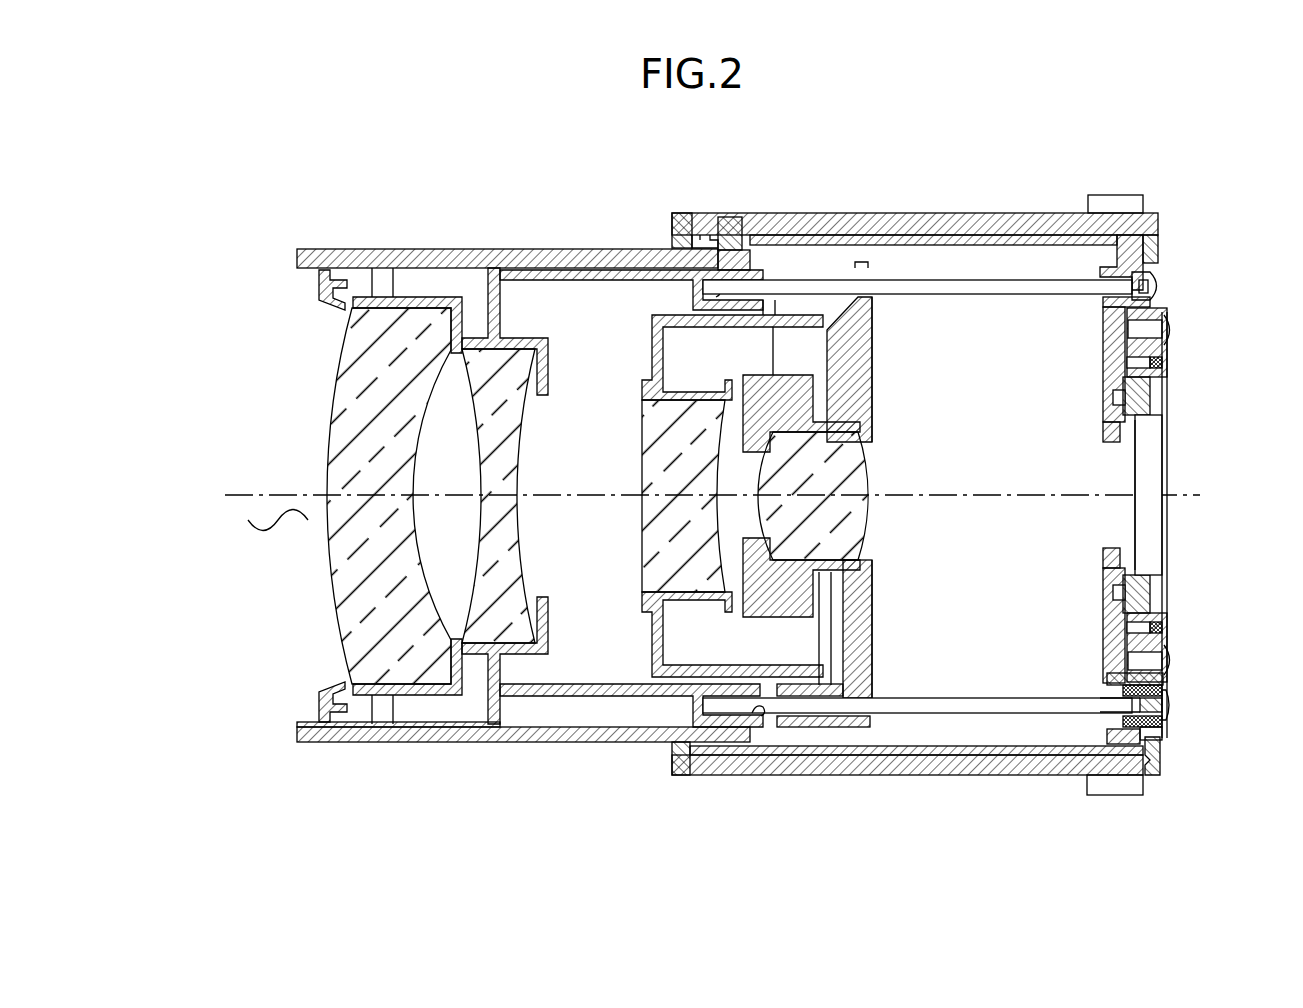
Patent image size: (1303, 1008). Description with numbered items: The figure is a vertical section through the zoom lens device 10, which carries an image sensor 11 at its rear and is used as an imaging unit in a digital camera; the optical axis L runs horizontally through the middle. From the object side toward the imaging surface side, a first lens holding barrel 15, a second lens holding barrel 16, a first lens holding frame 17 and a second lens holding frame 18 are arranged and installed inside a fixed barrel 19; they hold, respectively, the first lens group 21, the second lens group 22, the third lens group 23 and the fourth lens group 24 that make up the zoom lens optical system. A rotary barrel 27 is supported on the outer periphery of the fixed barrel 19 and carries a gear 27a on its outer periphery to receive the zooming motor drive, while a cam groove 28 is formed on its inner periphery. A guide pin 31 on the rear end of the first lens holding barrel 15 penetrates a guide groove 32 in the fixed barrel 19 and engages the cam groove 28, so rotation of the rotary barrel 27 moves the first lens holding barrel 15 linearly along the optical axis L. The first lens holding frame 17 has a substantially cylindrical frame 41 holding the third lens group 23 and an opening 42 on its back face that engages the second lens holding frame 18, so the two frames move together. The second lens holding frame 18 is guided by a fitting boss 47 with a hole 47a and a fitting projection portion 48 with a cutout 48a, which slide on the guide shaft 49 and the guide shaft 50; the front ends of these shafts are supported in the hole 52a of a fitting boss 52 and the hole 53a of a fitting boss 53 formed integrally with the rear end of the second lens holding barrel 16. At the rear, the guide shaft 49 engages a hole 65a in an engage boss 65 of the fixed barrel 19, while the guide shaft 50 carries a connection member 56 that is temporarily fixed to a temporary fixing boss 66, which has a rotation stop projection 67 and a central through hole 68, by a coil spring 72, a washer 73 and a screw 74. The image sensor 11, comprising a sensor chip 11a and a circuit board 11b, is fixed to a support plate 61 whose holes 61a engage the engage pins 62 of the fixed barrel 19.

The zoom lens device 10 is at (255, 220).
The image sensor 11 is at (1140, 472).
The sensor chip 11a is at (1128, 517).
The circuit board 11b is at (1168, 517).
The first lens holding barrel 15 is at (370, 247).
The second lens holding barrel 16 is at (543, 247).
The first lens holding frame 17 is at (782, 316).
The second lens holding frame 18 is at (874, 298).
The fixed barrel 19 is at (1133, 235).
The first lens group 21 is at (400, 620).
The second lens group 22 is at (510, 580).
The third lens group 23 is at (690, 560).
The fourth lens group 24 is at (820, 520).
The rotary barrel 27 is at (1058, 220).
The gear 27a is at (1127, 193).
The cam groove 28 is at (702, 233).
The guide pin 31 is at (740, 215).
The guide groove 32 is at (1003, 236).
The frame 41 is at (655, 366).
The opening 42 is at (793, 400).
The fitting boss 47 is at (920, 735).
The hole 47a is at (872, 688).
The fitting projection portion 48 is at (860, 380).
The cutout 48a is at (860, 268).
The guide shaft 49 is at (1015, 289).
The guide shaft 50 is at (941, 708).
The fitting boss 52 is at (662, 308).
The hole 52a is at (700, 288).
The fitting boss 53 is at (645, 690).
The hole 53a is at (760, 712).
The connection member 56 is at (1112, 683).
The support plate 61 is at (1160, 775).
The holes 61a is at (1150, 364).
The engage pins 62 is at (1158, 362).
The engage boss 65 is at (1162, 296).
The hole 65a is at (1118, 295).
The temporary fixing boss 66 is at (1166, 760).
The rotation stop projection 67 is at (1118, 732).
The through hole 68 is at (1120, 700).
The coil spring 72 is at (1165, 690).
The washer 73 is at (1162, 732).
The screw 74 is at (1168, 712).
The optical axis L is at (278, 543).